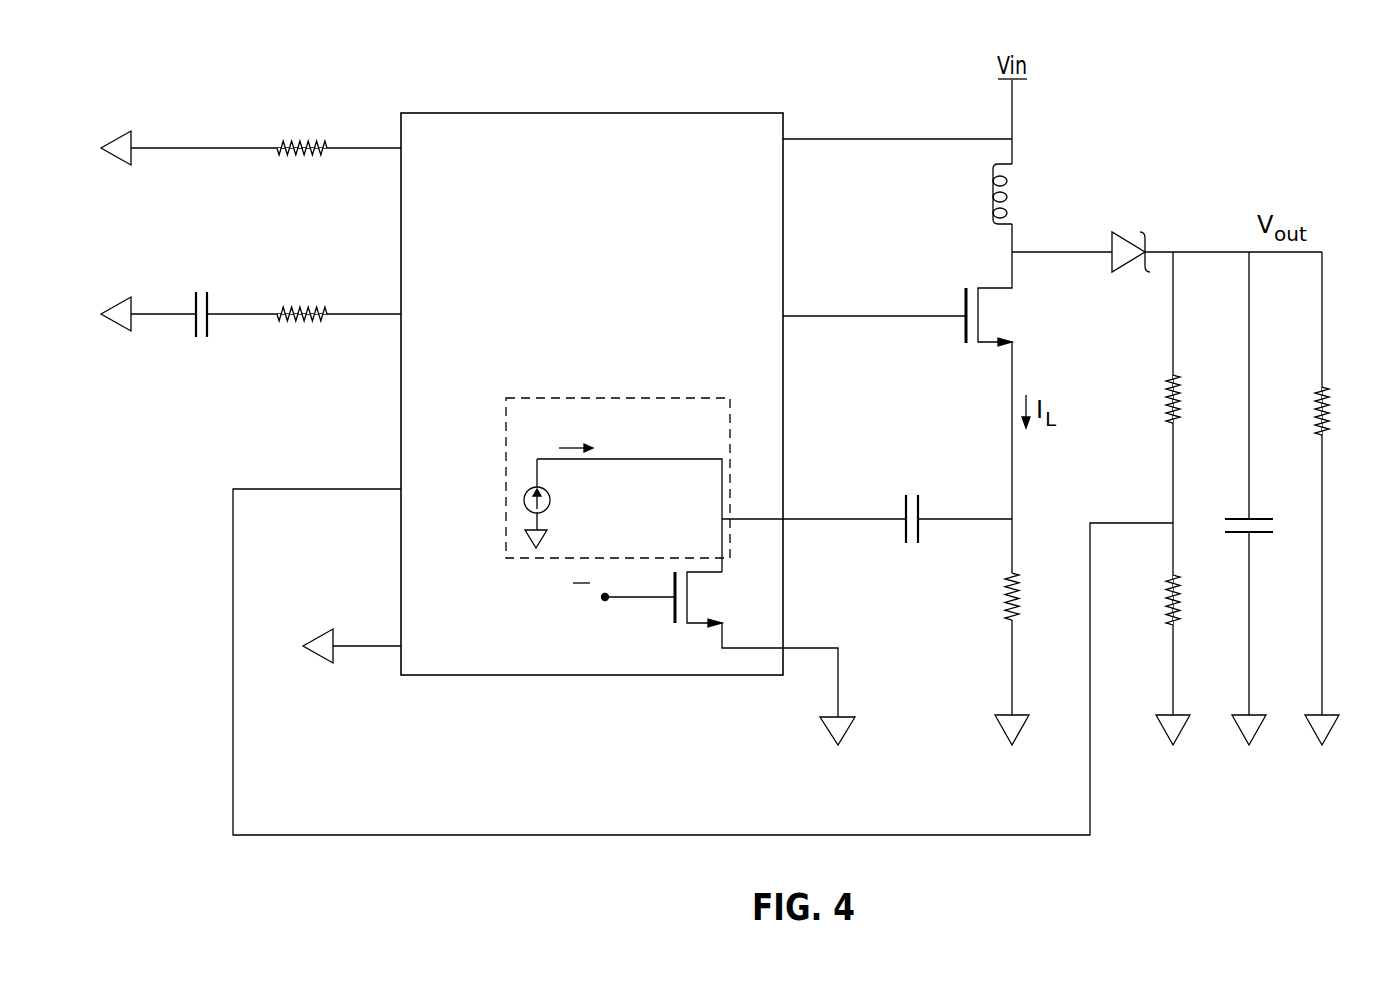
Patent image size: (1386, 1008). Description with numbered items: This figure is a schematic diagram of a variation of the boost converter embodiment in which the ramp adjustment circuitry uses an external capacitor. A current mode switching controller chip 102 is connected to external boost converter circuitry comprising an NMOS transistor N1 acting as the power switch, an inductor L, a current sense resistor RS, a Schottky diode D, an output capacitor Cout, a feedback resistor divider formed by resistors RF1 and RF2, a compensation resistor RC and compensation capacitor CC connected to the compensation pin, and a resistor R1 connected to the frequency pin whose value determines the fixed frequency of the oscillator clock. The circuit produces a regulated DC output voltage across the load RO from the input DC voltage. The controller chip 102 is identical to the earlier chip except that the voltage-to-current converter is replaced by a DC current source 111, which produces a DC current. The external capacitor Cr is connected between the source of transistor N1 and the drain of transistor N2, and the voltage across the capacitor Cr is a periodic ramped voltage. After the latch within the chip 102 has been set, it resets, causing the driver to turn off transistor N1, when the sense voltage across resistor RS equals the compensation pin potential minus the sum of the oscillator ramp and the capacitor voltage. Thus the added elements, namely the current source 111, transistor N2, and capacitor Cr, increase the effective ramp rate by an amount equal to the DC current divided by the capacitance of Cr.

The controller chip 102 is at (503, 112).
The DC current source 111 is at (547, 398).
The NMOS transistor N1 is at (985, 287).
The transistor N2 is at (690, 627).
The inductor L is at (1014, 194).
The Schottky diode D is at (1110, 243).
The current sense resistor RS is at (1025, 659).
The capacitor Cr is at (909, 498).
The resistor R1 is at (251, 162).
The compensation resistor RC is at (304, 334).
The compensation capacitor CC is at (157, 339).
The feedback resistor RF1 is at (1196, 387).
The feedback resistor RF2 is at (1191, 634).
The capacitor Cout is at (1266, 498).
The load RO is at (1335, 498).